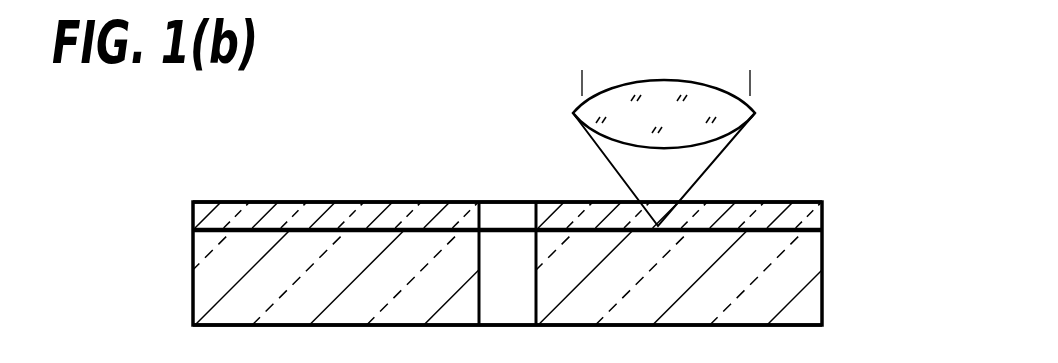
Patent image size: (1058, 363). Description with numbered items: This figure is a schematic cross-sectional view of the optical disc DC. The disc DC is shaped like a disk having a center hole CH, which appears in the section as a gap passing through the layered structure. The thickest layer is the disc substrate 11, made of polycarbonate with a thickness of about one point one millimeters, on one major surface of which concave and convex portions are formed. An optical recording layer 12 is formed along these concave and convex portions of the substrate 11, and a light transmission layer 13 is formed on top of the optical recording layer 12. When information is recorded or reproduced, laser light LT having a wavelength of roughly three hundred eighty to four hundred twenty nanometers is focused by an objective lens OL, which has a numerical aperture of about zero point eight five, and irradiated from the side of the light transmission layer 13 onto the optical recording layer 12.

The disc substrate 11 is at (797, 304).
The optical recording layer 12 is at (783, 238).
The light transmission layer 13 is at (797, 212).
The optical disc DC is at (328, 156).
The center hole CH is at (480, 256).
The objective lens OL is at (706, 104).
The laser light LT is at (717, 157).